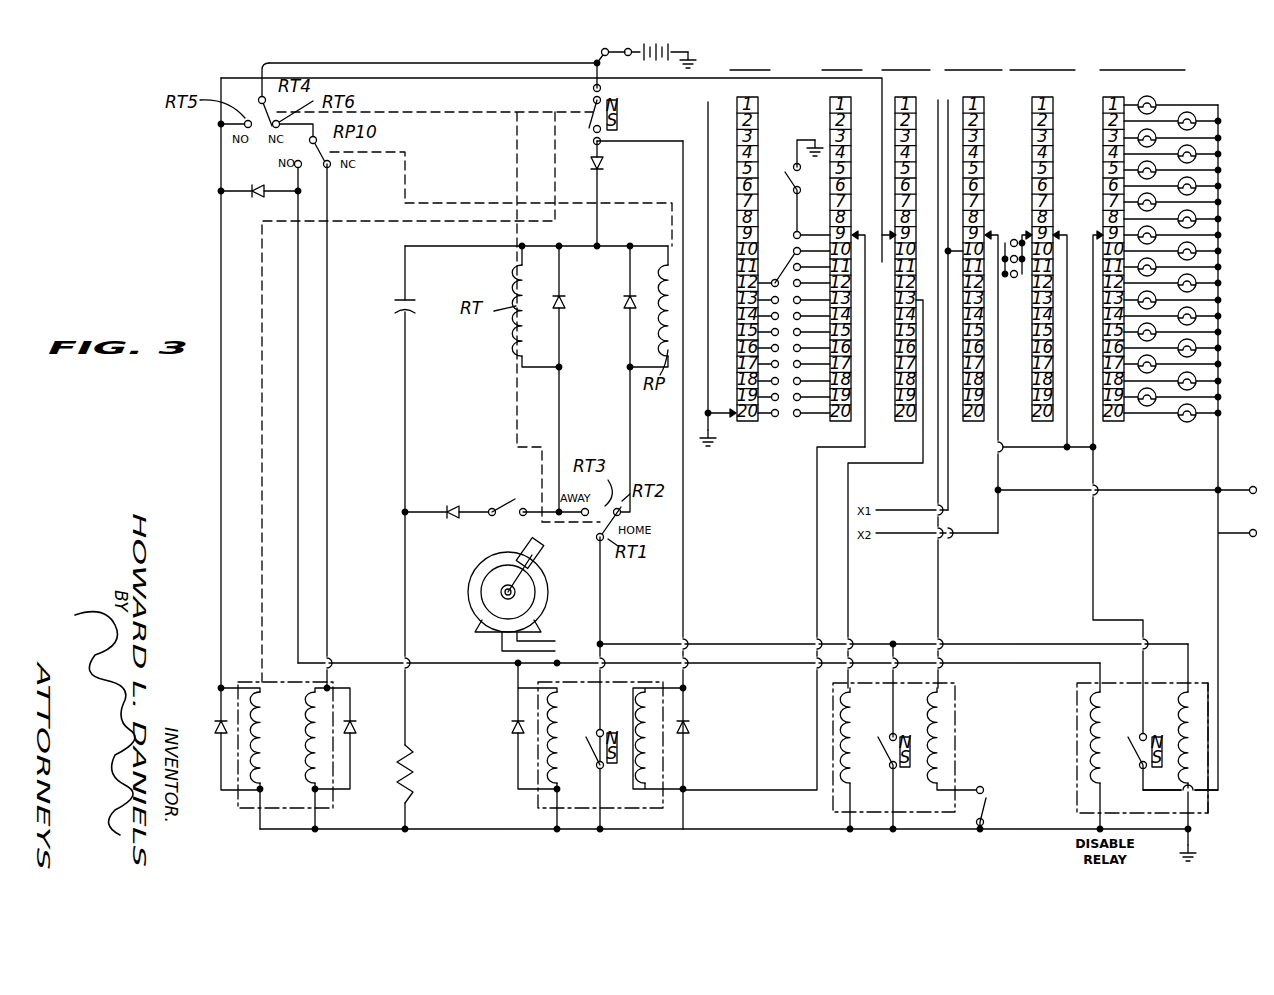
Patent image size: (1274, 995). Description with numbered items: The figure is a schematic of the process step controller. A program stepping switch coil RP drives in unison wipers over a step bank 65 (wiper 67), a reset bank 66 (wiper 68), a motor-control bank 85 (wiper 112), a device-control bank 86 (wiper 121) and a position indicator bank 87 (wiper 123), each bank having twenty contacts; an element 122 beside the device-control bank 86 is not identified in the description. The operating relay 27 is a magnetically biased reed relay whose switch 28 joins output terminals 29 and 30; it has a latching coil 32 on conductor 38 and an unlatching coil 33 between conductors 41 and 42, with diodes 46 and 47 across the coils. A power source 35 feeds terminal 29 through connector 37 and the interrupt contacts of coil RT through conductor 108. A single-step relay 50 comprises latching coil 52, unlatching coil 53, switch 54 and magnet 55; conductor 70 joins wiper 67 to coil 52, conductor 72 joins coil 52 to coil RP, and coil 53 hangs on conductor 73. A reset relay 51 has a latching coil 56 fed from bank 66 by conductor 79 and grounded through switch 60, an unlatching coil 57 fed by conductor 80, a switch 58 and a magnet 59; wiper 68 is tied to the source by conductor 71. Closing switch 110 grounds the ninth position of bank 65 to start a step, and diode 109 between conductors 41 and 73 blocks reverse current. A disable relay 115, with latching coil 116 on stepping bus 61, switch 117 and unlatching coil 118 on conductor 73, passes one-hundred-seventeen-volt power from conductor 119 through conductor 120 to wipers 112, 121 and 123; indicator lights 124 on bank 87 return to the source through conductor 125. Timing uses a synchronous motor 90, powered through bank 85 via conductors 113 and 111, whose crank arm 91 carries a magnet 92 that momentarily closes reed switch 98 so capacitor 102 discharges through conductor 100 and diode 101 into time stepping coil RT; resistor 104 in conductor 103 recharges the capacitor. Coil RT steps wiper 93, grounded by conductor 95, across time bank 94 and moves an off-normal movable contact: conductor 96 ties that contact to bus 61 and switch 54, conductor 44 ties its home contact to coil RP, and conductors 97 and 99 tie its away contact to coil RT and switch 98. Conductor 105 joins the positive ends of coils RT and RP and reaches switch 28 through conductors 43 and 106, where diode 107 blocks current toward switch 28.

The operating relay 27 is at (333, 810).
The switch 28 is at (604, 106).
The output terminal 29 is at (594, 88).
The output terminal 30 is at (594, 142).
The latching coil 32 is at (312, 771).
The unlatching coil 33 is at (268, 729).
The power source 35 is at (660, 66).
The connector 37 is at (601, 64).
The conductor 38 is at (328, 490).
The conductor 41 is at (218, 479).
The conductor 42 is at (436, 828).
The conductor 43 is at (601, 143).
The conductor 44 is at (631, 428).
The diode 46 is at (352, 720).
The diode 47 is at (217, 742).
The single-step relay 50 is at (655, 810).
The reset relay 51 is at (938, 814).
The latching coil 52 is at (640, 714).
The unlatching coil 53 is at (562, 719).
The switch 54 is at (586, 767).
The magnet 55 is at (612, 766).
The latching coil 56 is at (950, 749).
The unlatching coil 57 is at (845, 776).
The switch 58 is at (885, 770).
The magnet 59 is at (903, 767).
The switch 60 is at (989, 812).
The stepping bus 61 is at (744, 642).
The step bank 65 is at (845, 109).
The reset bank 66 is at (937, 104).
The wiper arm 67 is at (857, 228).
The wiper arm 68 is at (884, 257).
The conductor 70 is at (815, 462).
The conductor 71 is at (886, 150).
The conductor 72 is at (685, 558).
The conductor 73 is at (452, 665).
The conductor 79 is at (939, 566).
The conductor 80 is at (849, 576).
The motor-control bank 85 is at (982, 109).
The device-control bank 86 is at (1049, 110).
The position indicator bank 87 is at (1101, 108).
The timing motor 90 is at (547, 590).
The crank arm 91 is at (524, 581).
The permanent magnet 92 is at (539, 552).
The wiper 93 is at (711, 428).
The time bank 94 is at (759, 109).
The conductor 95 is at (708, 108).
The conductor 96 is at (601, 603).
The conductor 97 is at (562, 411).
The switch 98 is at (495, 506).
The conductor 99 is at (522, 506).
The conductor 100 is at (406, 406).
The diode 101 is at (450, 506).
The capacitor 102 is at (413, 316).
The conductor 103 is at (403, 580).
The resistor 104 is at (414, 766).
The conductor 105 is at (590, 250).
The conductor 106 is at (598, 228).
The diode 107 is at (601, 170).
The conductor 108 is at (455, 62).
The diode 109 is at (256, 198).
The switch 110 is at (789, 172).
The conductor 111 is at (1049, 490).
The wiper 112 is at (1000, 232).
The conductor 113 is at (947, 240).
The disable relay 115 is at (1205, 816).
The latching coil 116 is at (1192, 716).
The switch 117 is at (1135, 771).
The unlatching coil 118 is at (1095, 719).
The conductor 119 is at (1220, 618).
The conductor 120 is at (1094, 556).
The wiper 121 is at (1067, 232).
The contacts 122 is at (1010, 243).
The wiper 123 is at (1093, 240).
The indicator device 124 is at (1192, 118).
The conductor 125 is at (1220, 228).